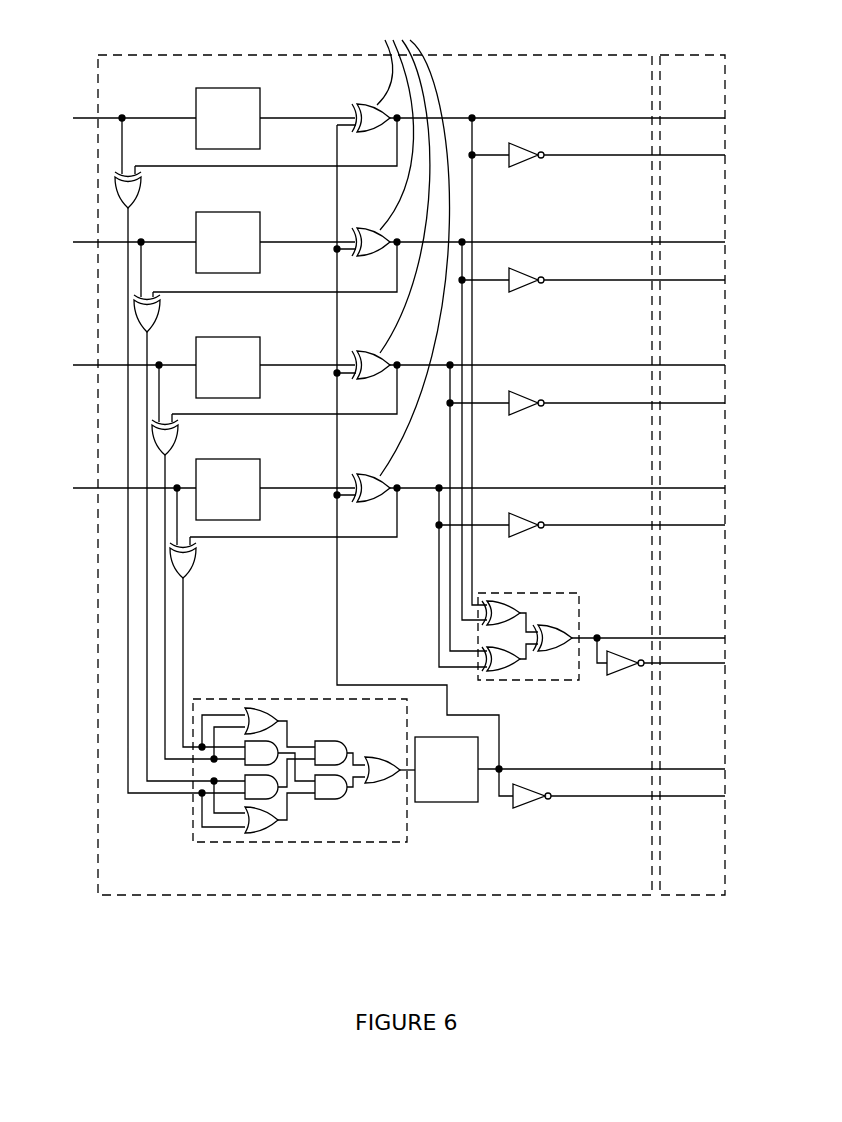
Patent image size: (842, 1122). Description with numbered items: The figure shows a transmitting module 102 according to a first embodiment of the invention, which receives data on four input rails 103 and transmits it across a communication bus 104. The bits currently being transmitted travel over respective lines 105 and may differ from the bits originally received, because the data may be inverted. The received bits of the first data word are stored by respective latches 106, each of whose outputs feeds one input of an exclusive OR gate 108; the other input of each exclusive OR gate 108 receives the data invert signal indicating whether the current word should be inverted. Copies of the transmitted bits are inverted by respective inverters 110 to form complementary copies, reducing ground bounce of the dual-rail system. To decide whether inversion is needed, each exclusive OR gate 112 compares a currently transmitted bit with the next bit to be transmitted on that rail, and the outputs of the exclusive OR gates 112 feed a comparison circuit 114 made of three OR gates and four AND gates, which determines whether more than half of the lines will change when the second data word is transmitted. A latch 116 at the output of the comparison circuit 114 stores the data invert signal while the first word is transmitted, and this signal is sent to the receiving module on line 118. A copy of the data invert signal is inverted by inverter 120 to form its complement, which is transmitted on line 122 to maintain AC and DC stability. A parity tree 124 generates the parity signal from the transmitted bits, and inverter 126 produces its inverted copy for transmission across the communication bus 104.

The transmitting module 102 is at (370, 895).
The input rails 103 is at (90, 123).
The communication bus 104 is at (715, 895).
The lines 105 is at (687, 118).
The latches 106 is at (275, 304).
The exclusive OR gates 108 is at (416, 396).
The inverters 110 is at (560, 151).
The exclusive OR gates 112 is at (115, 182).
The comparison circuit 114 is at (272, 842).
The latch 116 is at (446, 769).
The line 118 is at (683, 769).
The inverter 120 is at (530, 806).
The line 122 is at (683, 796).
The parity tree 124 is at (530, 593).
The inverter 126 is at (650, 660).